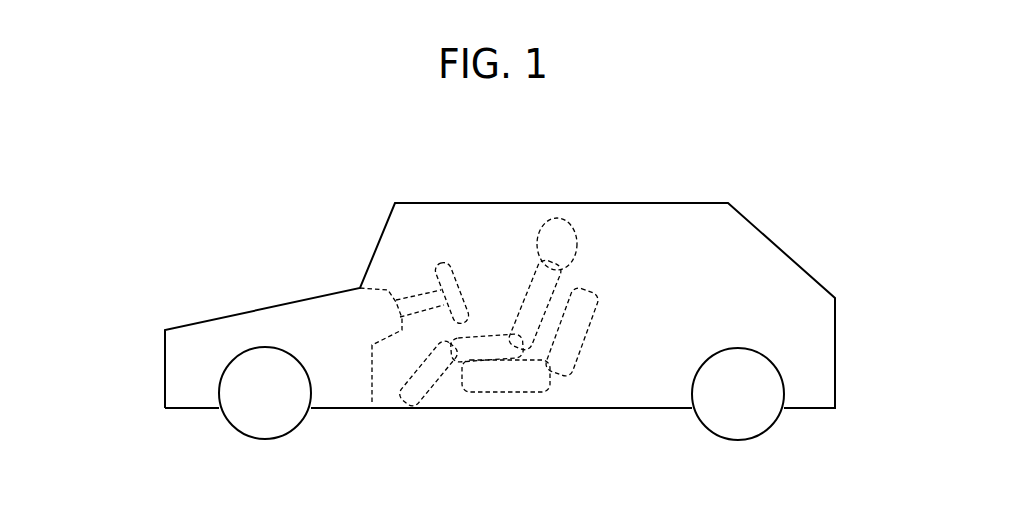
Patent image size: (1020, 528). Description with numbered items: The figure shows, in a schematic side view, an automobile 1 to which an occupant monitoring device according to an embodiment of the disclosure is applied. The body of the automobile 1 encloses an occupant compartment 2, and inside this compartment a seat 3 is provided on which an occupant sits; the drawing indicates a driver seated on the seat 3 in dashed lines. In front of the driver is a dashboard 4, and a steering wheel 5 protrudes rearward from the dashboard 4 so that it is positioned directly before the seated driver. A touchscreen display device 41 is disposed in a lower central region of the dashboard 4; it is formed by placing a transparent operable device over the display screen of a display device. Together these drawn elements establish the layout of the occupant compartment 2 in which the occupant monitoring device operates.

The automobile 1 is at (268, 210).
The occupant compartment 2 is at (645, 227).
The seat 3 is at (532, 393).
The dashboard 4 is at (371, 270).
The touchscreen display device 41 is at (400, 295).
The steering wheel 5 is at (468, 305).